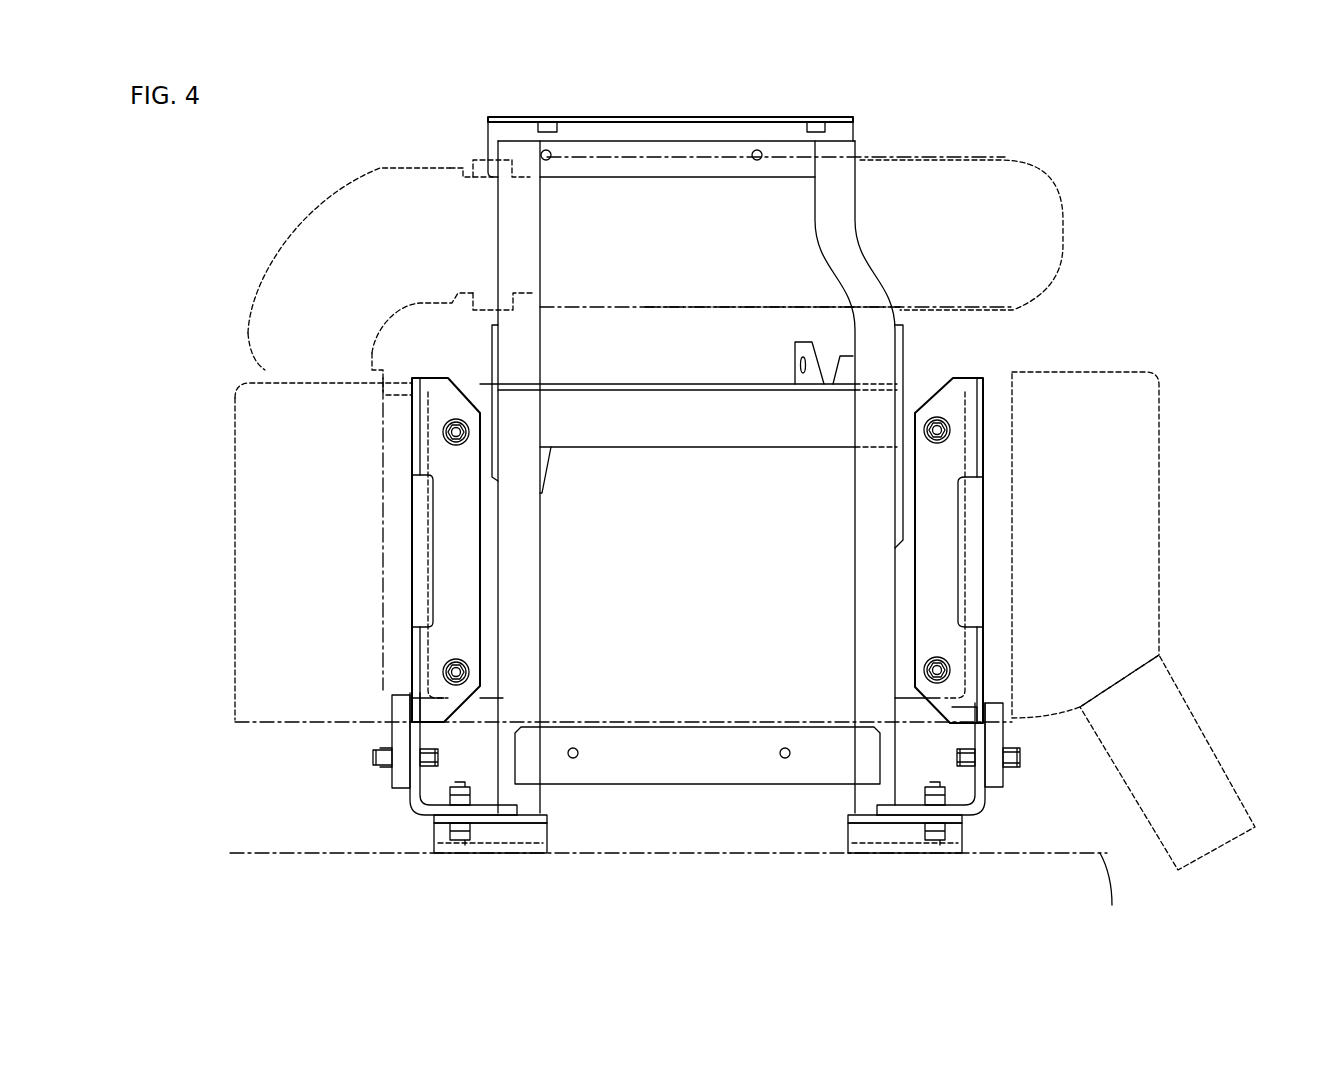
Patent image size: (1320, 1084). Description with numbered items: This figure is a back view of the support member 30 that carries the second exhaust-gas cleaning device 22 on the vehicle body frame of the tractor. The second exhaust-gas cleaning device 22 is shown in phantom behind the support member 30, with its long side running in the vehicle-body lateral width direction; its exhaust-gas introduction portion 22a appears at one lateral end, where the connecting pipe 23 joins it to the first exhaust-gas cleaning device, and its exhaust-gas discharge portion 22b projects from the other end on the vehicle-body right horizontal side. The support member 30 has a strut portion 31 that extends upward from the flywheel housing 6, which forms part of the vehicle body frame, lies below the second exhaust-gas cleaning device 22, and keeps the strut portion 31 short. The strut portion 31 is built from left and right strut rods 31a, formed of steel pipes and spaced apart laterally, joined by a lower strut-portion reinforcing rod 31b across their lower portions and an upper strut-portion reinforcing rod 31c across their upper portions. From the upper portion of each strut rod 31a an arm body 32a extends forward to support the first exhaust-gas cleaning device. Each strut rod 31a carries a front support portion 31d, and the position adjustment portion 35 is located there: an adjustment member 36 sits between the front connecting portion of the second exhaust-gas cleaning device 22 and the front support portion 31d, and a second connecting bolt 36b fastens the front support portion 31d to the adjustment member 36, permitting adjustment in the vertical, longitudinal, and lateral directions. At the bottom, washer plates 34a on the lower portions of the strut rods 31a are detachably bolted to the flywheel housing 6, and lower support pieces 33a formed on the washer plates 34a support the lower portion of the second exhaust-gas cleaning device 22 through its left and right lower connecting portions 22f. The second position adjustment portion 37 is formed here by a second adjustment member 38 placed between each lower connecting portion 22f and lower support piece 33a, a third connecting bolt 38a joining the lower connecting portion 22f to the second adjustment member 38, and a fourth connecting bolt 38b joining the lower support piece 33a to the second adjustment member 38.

The flywheel housing 6 is at (270, 853).
The second exhaust-gas cleaning device 22 is at (235, 538).
The exhaust-gas introduction portion 22a is at (248, 355).
The exhaust-gas discharge portion 22b is at (1185, 710).
The lower connecting portion 22f is at (400, 790).
The connecting pipe 23 is at (645, 310).
The support member 30 is at (933, 238).
The strut portion 31 is at (715, 445).
The strut rod 31a is at (540, 580).
The lower strut-portion reinforcing rod 31b is at (705, 727).
The upper strut-portion reinforcing rod 31c is at (712, 116).
The front support portion 31d is at (432, 552).
The arm body 32a is at (797, 355).
The lower support piece 33a is at (552, 820).
The washer plate 34a is at (530, 852).
The position adjustment portion 35 is at (448, 418).
The adjustment member 36 is at (470, 545).
The second connecting bolt 36b is at (442, 432).
The second position adjustment portion 37 is at (407, 820).
The second adjustment member 38 is at (418, 818).
The third connecting bolt 38a is at (438, 758).
The fourth connecting bolt 38b is at (460, 842).